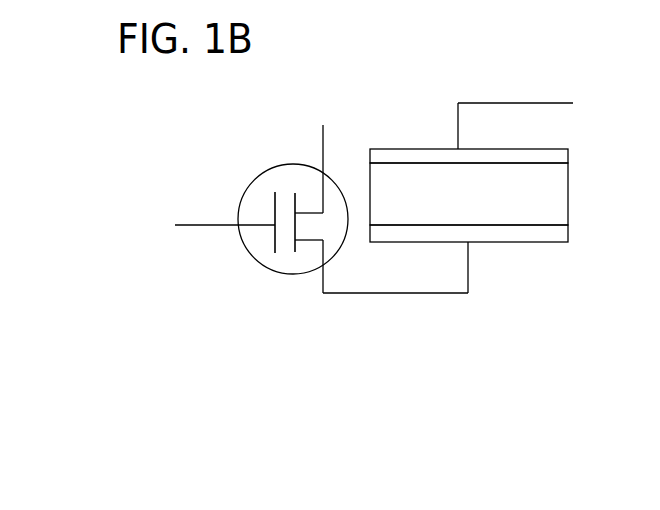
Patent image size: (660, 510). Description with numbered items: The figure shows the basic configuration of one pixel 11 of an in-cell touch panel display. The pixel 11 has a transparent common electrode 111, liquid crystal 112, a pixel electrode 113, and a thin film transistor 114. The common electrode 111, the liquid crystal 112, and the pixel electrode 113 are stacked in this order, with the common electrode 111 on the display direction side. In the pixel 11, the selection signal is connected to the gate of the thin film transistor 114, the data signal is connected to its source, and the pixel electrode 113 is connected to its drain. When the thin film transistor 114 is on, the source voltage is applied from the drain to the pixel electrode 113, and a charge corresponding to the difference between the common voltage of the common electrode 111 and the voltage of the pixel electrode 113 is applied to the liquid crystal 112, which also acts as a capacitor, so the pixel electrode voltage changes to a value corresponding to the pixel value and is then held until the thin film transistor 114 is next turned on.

The pixel 11 is at (193, 110).
The common electrode 111 is at (568, 159).
The liquid crystal 112 is at (568, 191).
The pixel electrode 113 is at (568, 223).
The thin film transistor 114 is at (247, 183).